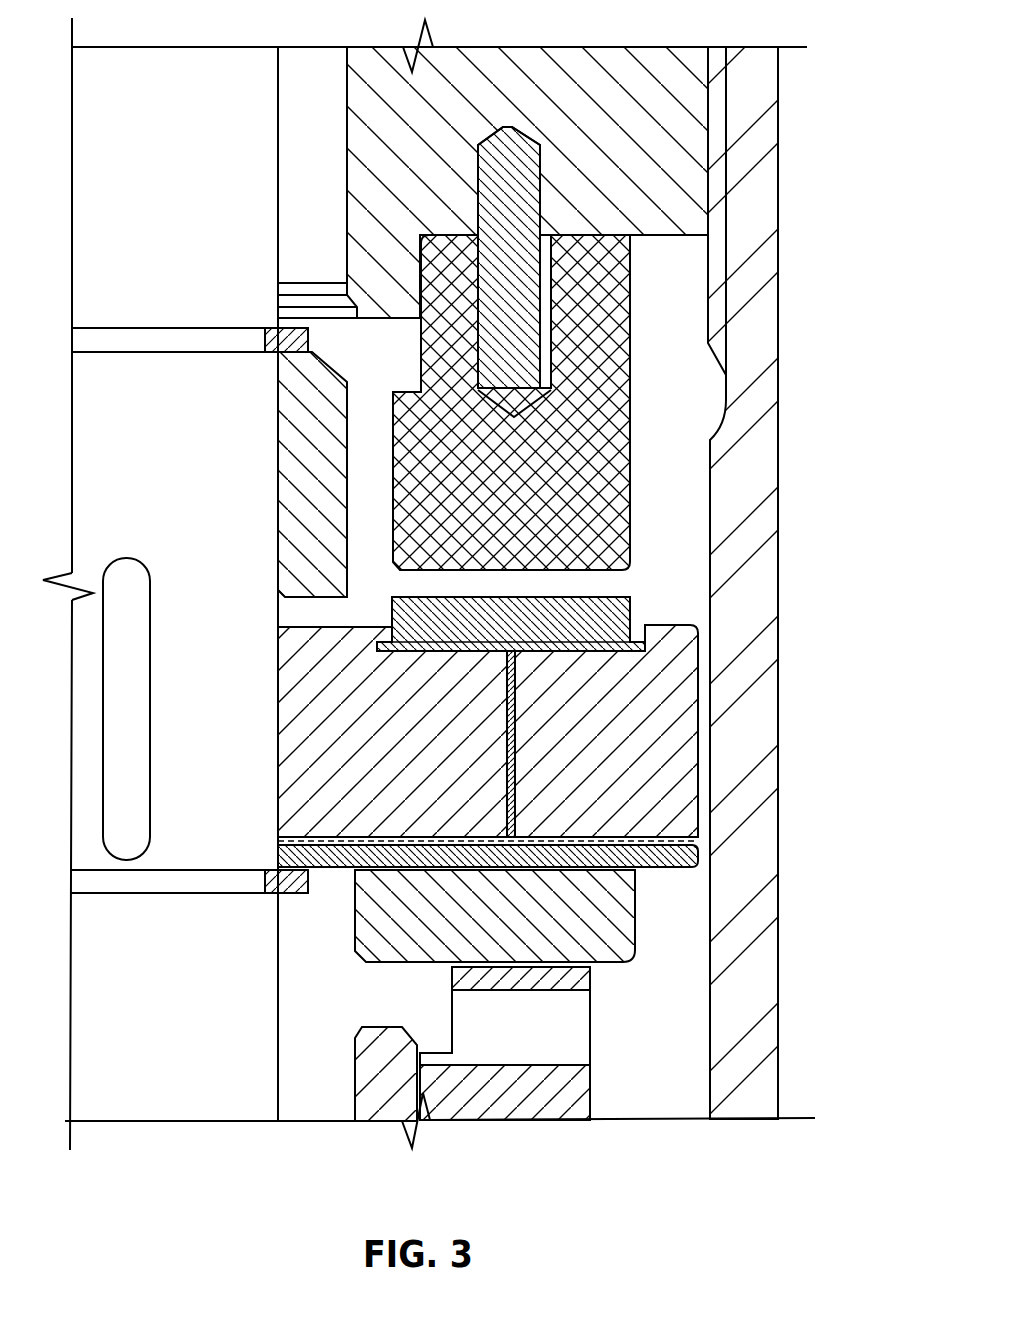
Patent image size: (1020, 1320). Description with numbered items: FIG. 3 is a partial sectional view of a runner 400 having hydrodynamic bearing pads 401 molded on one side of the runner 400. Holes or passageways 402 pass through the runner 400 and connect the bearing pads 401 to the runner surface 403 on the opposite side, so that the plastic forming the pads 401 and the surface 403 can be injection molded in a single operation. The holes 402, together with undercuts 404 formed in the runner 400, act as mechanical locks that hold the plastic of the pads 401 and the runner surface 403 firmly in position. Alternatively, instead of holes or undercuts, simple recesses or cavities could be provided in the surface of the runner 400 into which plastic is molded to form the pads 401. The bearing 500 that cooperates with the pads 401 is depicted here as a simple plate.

The bearing 500 is at (597, 515).
The runner 400 is at (662, 782).
The bearing pads 401 is at (603, 613).
The undercuts 404 is at (657, 645).
The holes or passageways 402 is at (520, 763).
The runner surface 403 is at (705, 858).